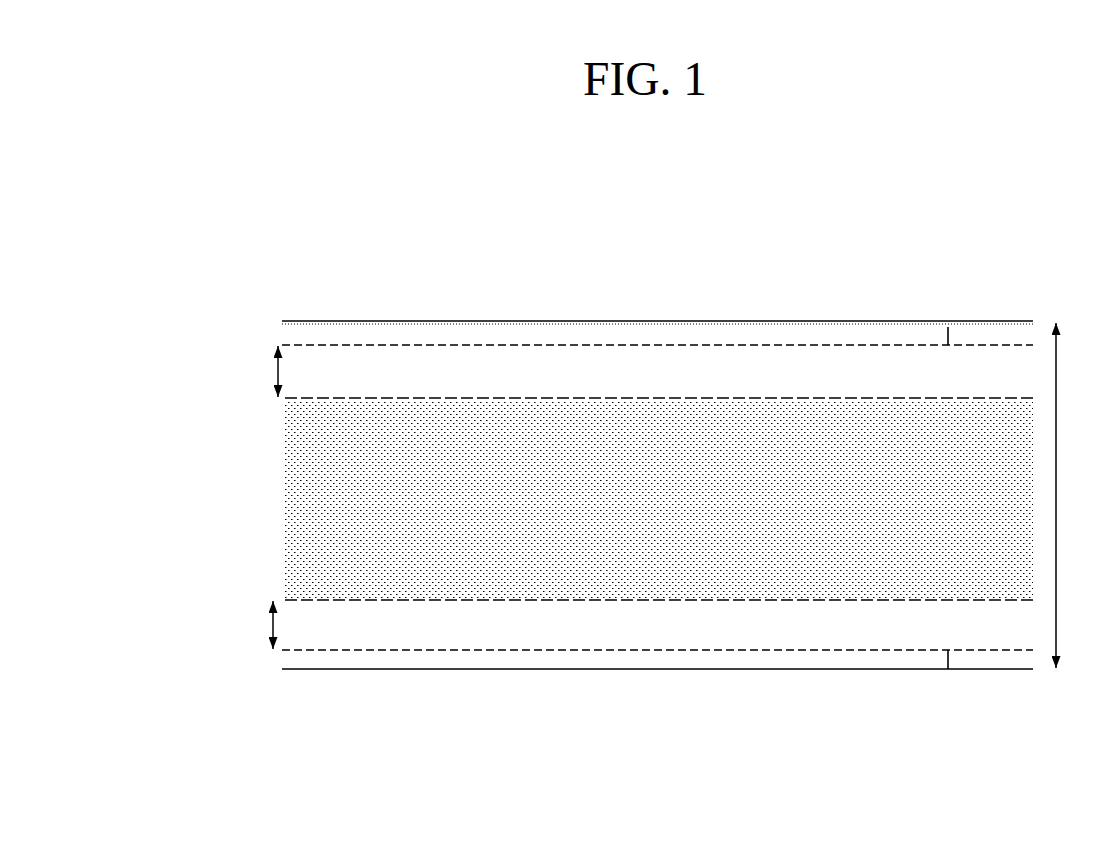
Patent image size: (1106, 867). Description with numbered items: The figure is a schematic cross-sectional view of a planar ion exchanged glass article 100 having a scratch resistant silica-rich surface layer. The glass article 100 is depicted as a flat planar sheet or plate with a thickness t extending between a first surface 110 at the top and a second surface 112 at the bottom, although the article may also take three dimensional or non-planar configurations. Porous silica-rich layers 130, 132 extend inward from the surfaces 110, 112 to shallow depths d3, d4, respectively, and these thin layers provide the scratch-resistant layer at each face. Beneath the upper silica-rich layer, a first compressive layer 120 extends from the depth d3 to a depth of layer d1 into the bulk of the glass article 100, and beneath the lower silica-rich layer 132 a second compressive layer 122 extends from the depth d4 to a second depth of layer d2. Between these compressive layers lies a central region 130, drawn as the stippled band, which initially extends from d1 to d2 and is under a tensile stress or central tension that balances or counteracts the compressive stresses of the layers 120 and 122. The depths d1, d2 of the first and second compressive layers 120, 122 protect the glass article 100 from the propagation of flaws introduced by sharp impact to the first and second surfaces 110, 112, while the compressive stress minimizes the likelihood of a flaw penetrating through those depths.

The glass article 100 is at (670, 218).
The first surface 110 is at (786, 318).
The second surface 112 is at (776, 672).
The first compressive layer 120 is at (423, 370).
The second compressive layer 122 is at (437, 626).
The central region 130 is at (586, 334).
The porous silica-rich layer 132 is at (610, 657).
The depth of layer of first compressive layer d1 is at (266, 373).
The second depth of layer d2 is at (262, 622).
The depth of silica-rich layer d3 is at (958, 332).
The depth of silica-rich layer d4 is at (955, 662).
The thickness t is at (1055, 495).